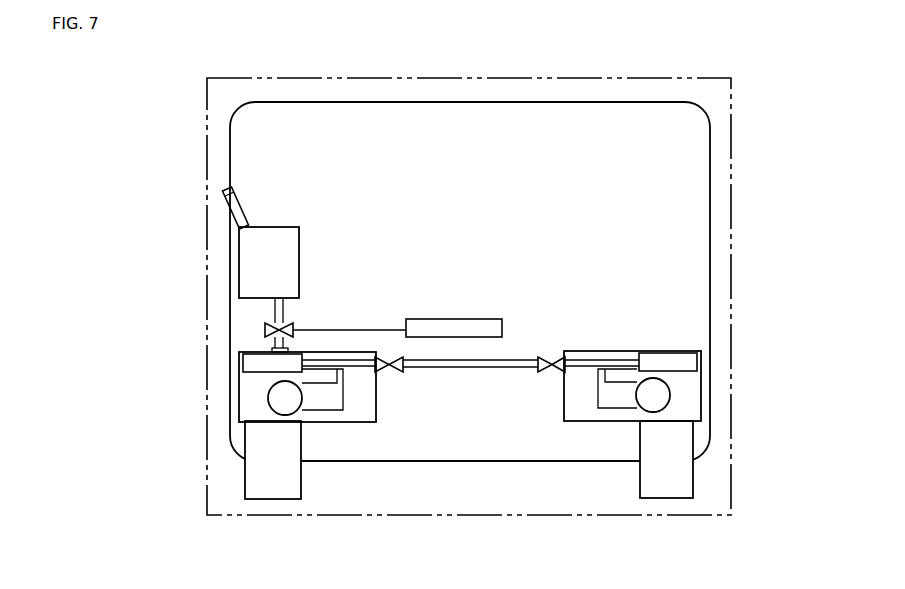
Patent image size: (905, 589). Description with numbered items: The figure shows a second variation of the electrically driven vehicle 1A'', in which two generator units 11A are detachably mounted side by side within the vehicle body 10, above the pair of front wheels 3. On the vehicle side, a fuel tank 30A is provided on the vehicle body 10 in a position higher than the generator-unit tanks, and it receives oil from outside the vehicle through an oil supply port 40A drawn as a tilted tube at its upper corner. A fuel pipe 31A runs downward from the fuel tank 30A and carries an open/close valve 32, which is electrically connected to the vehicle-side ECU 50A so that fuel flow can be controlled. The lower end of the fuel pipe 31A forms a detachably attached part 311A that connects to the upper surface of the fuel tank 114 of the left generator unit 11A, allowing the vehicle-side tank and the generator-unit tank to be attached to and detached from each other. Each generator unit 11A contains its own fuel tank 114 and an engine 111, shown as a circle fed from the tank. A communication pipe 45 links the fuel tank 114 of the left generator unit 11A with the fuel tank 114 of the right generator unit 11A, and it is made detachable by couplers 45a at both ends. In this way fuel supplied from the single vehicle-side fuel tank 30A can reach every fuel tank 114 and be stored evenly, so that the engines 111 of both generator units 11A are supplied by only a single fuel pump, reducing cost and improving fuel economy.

The electrically driven vehicle 1A'' is at (469, 261).
The vehicle body 10 is at (486, 102).
The oil supply port 40A is at (226, 194).
The fuel tank on the vehicle side 30A is at (250, 258).
The fuel pipe 31A is at (275, 302).
The open/close valve 32 is at (265, 330).
The detachably attached part 311A is at (258, 348).
The ECU on the vehicle side 50A is at (483, 329).
The front wheels 3 is at (265, 480).
The generator unit 11A is at (353, 413).
The fuel tank on the generator unit side 114 is at (257, 363).
The engine 111 is at (313, 400).
The couplers 45a is at (402, 372).
The communication pipe 45 is at (470, 367).